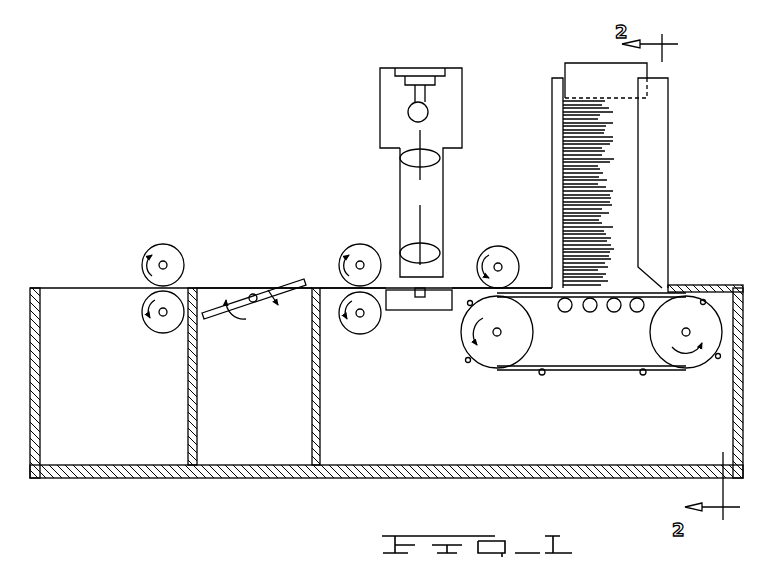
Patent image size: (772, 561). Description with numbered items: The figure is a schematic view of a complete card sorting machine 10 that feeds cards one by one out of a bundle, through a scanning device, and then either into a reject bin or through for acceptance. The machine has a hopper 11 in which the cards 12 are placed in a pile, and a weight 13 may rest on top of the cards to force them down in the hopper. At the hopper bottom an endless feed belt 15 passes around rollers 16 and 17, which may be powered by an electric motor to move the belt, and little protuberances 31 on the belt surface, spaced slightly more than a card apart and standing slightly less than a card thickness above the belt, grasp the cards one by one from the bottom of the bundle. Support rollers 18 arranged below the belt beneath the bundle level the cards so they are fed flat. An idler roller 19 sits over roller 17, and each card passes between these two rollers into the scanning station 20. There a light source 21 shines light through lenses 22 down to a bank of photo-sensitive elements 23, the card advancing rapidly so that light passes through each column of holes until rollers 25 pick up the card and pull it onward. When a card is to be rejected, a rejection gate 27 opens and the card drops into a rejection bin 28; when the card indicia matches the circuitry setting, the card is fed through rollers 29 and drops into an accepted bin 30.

The card sorting machine 10 is at (641, 164).
The hopper 11 is at (670, 170).
The cards 12 is at (625, 130).
The weight 13 is at (582, 72).
The endless feed belt 15 is at (598, 331).
The roller 16 is at (692, 305).
The roller 17 is at (492, 358).
The support rollers 18 is at (614, 313).
The idler roller 19 is at (507, 250).
The scanning station 20 is at (424, 172).
The light source 21 is at (432, 114).
The lenses 22 is at (410, 158).
The bank of photo-sensitive elements 23 is at (420, 300).
The rollers 25 is at (352, 245).
The rejection gate 27 is at (291, 286).
The rejection bin 28 is at (277, 450).
The rollers 29 is at (160, 245).
The accepted bin 30 is at (115, 452).
The protuberances 31 is at (542, 376).